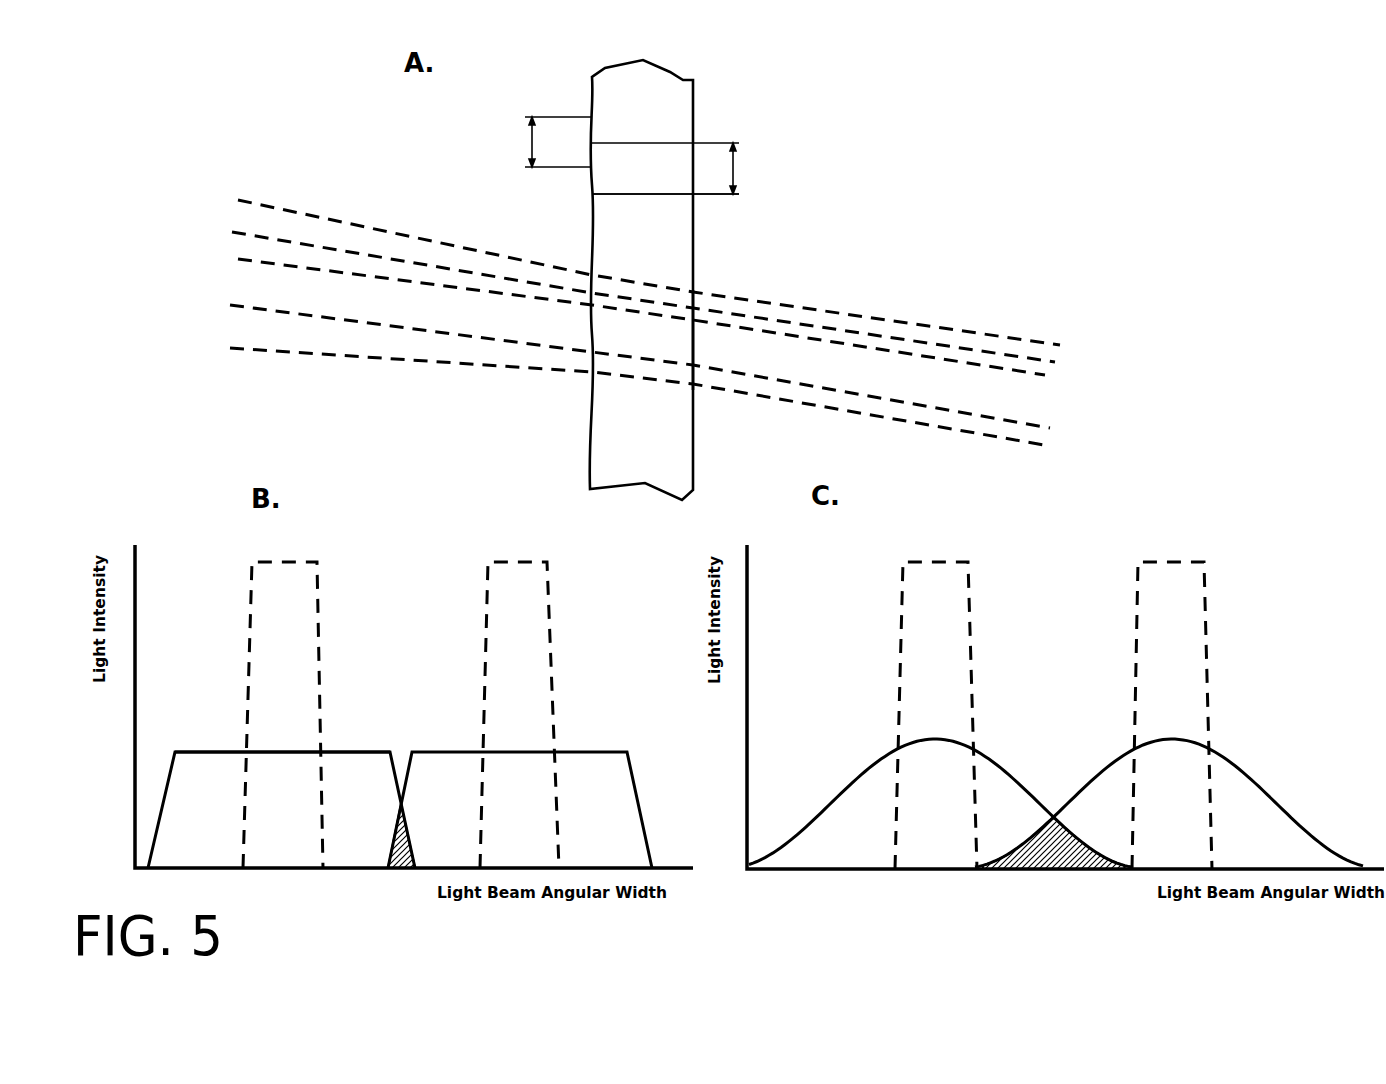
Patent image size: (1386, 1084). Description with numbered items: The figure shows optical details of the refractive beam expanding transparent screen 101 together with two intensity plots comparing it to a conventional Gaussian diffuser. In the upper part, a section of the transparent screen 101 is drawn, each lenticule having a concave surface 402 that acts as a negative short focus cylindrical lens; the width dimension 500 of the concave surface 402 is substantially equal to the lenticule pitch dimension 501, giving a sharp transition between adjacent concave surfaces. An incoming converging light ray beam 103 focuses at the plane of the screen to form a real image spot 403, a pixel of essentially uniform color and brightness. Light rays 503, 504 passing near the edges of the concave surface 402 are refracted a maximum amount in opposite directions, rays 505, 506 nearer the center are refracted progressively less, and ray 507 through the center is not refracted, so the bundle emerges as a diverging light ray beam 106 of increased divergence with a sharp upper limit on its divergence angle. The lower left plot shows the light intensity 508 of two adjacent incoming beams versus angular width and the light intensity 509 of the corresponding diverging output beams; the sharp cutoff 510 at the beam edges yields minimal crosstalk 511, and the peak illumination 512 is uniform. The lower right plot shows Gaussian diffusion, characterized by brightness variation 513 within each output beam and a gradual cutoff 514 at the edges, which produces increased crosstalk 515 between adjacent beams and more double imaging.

The transparent screen 101 is at (670, 270).
The incoming light ray beam 103 is at (1064, 280).
The diverging light ray beam 106 is at (281, 151).
The concave surface 402 is at (601, 186).
The real image spot 403 is at (783, 324).
The width dimension 500 is at (548, 127).
The lenticule pitch dimension 501 is at (673, 182).
The light ray 503 is at (626, 249).
The light ray 504 is at (612, 379).
The light ray 505 is at (621, 273).
The light ray 506 is at (610, 297).
The light ray 507 is at (612, 342).
The light intensity 508 is at (703, 698).
The light intensity 509 is at (281, 810).
The sharp cutoff 510 is at (520, 792).
The crosstalk 511 is at (381, 824).
The peak illumination 512 is at (281, 730).
The brightness variation 513 is at (941, 773).
The gradual cutoff 514 is at (1169, 775).
The crosstalk 515 is at (1054, 795).